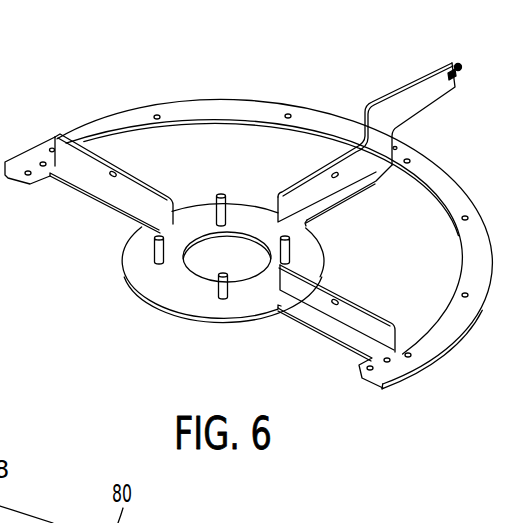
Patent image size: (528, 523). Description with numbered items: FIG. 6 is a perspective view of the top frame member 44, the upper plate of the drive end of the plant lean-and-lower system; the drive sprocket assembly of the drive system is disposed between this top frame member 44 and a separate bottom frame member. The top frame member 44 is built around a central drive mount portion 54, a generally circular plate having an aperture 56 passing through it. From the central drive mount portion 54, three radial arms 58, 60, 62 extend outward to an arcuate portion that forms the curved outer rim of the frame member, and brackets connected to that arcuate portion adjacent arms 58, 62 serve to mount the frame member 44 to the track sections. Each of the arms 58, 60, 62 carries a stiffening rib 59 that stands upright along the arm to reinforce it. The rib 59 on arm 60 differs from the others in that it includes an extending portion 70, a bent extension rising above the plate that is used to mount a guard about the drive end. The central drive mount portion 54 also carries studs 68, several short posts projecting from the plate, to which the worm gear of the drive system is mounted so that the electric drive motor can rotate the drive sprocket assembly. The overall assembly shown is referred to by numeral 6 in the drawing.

The fixture assembly 6 is at (477, 262).
The top frame member 44 is at (450, 174).
The central drive mount portion 54 is at (135, 270).
The aperture 56 is at (183, 257).
The radial arm 58 is at (72, 195).
The stiffening rib 59 is at (127, 170).
The radial arm 60 is at (376, 182).
The radial arm 62 is at (324, 324).
The studs 68 is at (220, 204).
The extending portion 70 is at (405, 98).